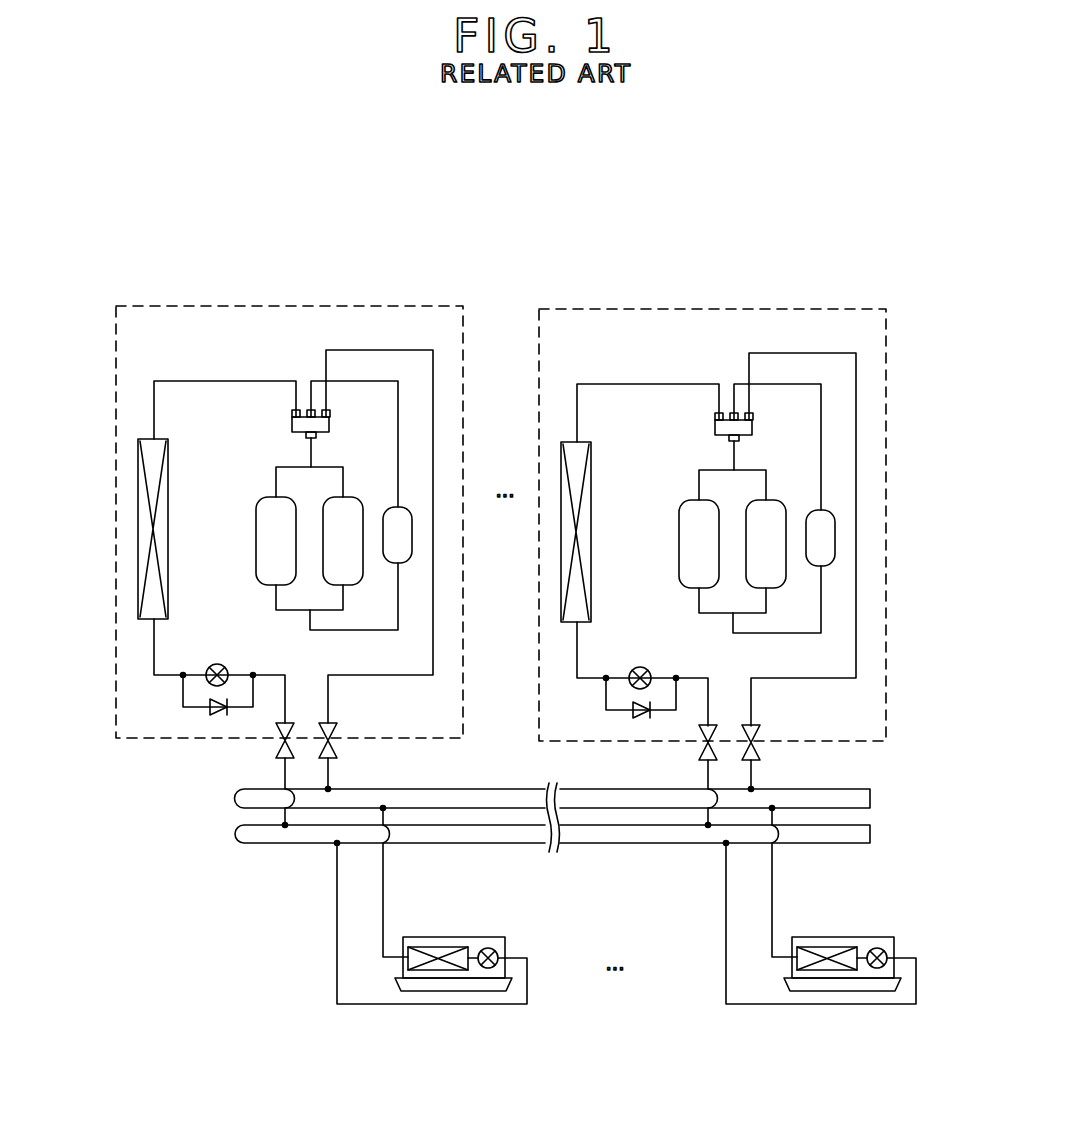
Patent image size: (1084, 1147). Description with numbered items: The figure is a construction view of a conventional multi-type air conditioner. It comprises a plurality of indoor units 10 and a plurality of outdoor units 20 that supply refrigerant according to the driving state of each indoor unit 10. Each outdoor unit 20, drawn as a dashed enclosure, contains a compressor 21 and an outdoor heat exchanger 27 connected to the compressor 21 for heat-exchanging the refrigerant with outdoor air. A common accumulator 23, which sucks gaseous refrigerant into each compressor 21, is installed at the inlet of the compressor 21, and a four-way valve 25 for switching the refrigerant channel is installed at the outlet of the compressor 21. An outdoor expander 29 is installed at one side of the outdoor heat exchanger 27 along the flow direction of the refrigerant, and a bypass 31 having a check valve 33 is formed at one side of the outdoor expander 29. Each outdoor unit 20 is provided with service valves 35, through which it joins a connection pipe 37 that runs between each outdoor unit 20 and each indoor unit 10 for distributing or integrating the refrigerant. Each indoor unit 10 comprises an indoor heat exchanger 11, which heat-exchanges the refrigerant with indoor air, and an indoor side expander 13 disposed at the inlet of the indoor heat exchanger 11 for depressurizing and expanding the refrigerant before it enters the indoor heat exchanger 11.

The indoor unit 10 is at (626, 956).
The indoor heat exchanger 11 is at (430, 970).
The indoor side expander 13 is at (488, 968).
The outdoor unit 20 is at (190, 306).
The compressor 21 is at (335, 565).
The common accumulator 23 is at (404, 517).
The four-way valve 25 is at (290, 424).
The outdoor heat exchanger 27 is at (140, 527).
The outdoor expander 29 is at (208, 667).
The bypass 31 is at (183, 697).
The check valve 33 is at (210, 712).
The service valves 35 is at (276, 750).
The connection pipe 37 is at (870, 802).